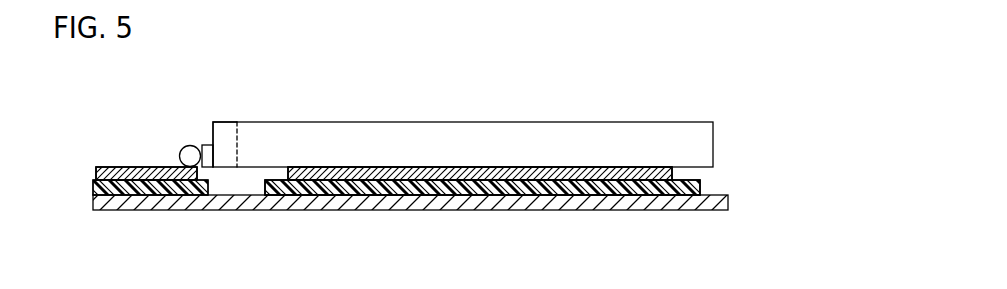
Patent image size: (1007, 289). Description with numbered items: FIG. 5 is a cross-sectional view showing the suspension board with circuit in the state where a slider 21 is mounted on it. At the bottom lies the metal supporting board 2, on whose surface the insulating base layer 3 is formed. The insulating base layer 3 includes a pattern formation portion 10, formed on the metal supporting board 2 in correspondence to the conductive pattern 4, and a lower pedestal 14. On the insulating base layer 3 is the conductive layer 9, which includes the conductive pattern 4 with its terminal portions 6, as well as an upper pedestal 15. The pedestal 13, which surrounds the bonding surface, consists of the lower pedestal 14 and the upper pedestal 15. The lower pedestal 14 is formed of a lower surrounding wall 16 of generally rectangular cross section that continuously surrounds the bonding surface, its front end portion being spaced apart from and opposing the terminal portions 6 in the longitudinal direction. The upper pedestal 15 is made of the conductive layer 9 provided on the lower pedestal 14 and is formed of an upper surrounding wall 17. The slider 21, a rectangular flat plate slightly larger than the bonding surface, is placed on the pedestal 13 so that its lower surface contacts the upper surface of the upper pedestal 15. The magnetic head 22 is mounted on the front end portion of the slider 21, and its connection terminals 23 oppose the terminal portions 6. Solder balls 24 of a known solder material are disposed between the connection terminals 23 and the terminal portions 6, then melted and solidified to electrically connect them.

The metal supporting board 2 is at (729, 203).
The insulating base layer 3 is at (396, 187).
The conductive pattern 4 is at (129, 127).
The terminal portions 6 is at (118, 166).
The conductive layer 9 is at (384, 173).
The pattern formation portion 10 is at (95, 190).
The pedestal 13 is at (566, 166).
The lower pedestal 14 is at (700, 192).
The upper pedestal 15 is at (675, 177).
The lower surrounding wall 16 is at (590, 192).
The upper surrounding wall 17 is at (575, 170).
The slider 21 is at (512, 132).
The magnetic head 22 is at (222, 132).
The connection terminals 23 is at (206, 145).
The solder balls 24 is at (180, 150).